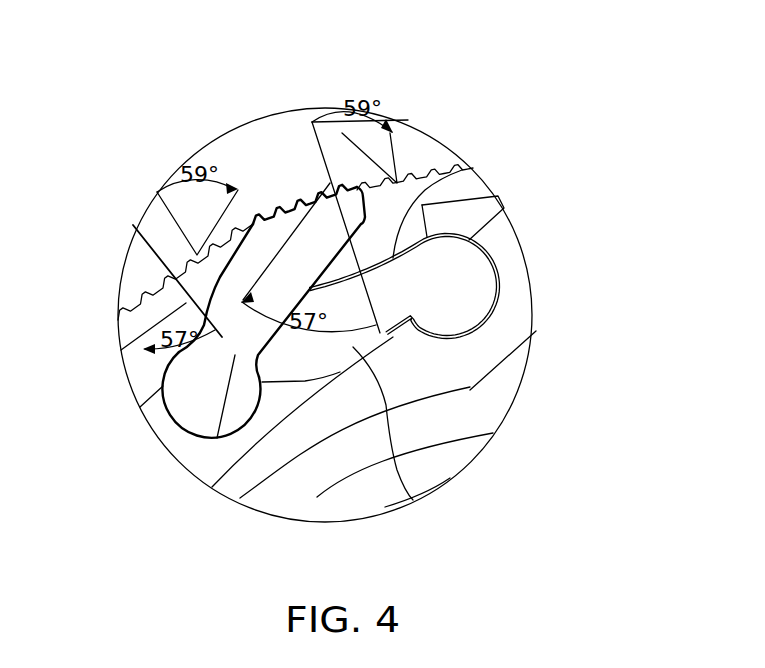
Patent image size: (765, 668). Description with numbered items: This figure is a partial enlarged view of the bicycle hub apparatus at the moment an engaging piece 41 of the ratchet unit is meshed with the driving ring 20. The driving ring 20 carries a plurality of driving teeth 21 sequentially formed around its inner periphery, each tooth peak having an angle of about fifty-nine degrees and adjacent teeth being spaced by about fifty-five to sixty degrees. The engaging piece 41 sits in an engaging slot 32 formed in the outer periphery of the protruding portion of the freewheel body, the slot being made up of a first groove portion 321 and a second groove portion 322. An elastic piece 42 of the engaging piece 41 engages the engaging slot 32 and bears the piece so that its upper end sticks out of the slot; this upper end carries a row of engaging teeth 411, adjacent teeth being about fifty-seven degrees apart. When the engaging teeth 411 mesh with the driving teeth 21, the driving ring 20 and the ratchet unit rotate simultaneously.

The driving ring 20 is at (408, 124).
The driving teeth 21 is at (293, 196).
The engaging teeth 411 is at (310, 203).
The first groove portion 321 is at (181, 433).
The engaging piece 41 is at (230, 283).
The elastic piece 42 is at (456, 165).
The second groove portion 322 is at (457, 293).
The engaging slot 32 is at (370, 466).